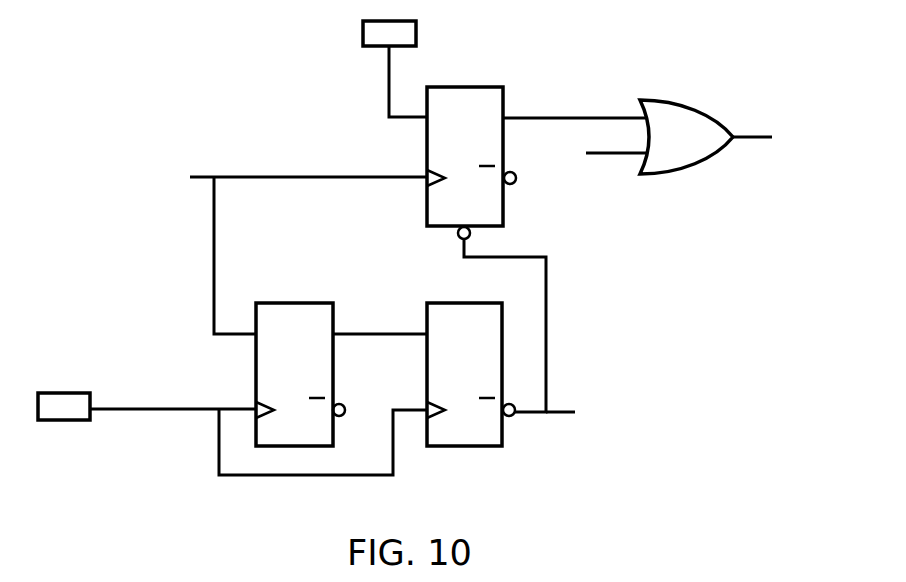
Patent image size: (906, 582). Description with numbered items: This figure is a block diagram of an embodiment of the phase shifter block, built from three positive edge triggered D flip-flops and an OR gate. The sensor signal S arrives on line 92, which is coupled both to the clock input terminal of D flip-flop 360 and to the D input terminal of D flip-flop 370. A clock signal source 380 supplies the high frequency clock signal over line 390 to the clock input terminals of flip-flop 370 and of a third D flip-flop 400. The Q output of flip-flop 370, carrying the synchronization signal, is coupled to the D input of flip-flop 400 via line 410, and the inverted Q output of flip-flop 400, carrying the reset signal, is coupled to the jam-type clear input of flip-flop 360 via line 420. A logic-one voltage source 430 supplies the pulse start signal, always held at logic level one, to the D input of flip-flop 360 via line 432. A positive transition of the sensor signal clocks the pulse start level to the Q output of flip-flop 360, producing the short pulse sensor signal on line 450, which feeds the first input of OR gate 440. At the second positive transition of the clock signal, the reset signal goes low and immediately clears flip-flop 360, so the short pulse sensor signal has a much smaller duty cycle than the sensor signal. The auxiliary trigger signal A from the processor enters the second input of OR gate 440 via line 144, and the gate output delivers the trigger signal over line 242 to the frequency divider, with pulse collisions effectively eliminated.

The line 92 is at (198, 176).
The line 144 is at (616, 155).
The line 242 is at (750, 139).
The positive edge triggered D flip-flop 360 is at (442, 86).
The positive edge triggered D flip-flop 370 is at (292, 303).
The clock signal source 380 is at (58, 393).
The line 390 is at (150, 407).
The positive edge triggered D flip-flop 400 is at (482, 447).
The line 410 is at (386, 337).
The line 420 is at (546, 322).
The logic 1 voltage source 430 is at (363, 30).
The line 432 is at (389, 103).
The OR gate 440 is at (703, 105).
The SENSOR_SHRINK signal line 450 is at (598, 117).